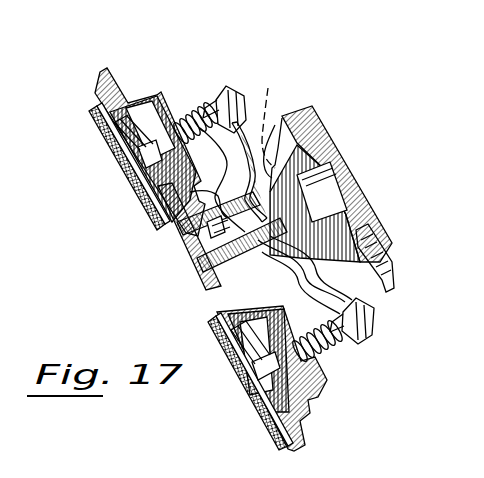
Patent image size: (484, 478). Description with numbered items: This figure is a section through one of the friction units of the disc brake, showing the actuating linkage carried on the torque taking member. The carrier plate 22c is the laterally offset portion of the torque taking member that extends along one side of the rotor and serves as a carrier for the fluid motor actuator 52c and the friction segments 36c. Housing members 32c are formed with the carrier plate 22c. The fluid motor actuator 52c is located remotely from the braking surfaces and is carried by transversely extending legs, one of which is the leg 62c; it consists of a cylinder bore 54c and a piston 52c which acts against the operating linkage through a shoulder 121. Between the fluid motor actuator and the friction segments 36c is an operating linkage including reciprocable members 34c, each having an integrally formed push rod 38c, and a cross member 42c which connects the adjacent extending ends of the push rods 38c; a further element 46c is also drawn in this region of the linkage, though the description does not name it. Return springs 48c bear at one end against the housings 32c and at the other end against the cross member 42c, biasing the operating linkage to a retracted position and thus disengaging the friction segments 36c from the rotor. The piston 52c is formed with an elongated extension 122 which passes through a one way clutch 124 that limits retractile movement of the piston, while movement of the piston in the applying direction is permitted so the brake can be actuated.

The carrier plate 22c is at (212, 291).
The housing member 32c is at (156, 94).
The reciprocable member 34c is at (168, 170).
The friction segment 36c is at (100, 128).
The push rod 38c is at (218, 98).
The cross member 42c is at (350, 292).
The strap 46c is at (257, 117).
The return spring 48c is at (200, 110).
The fluid motor actuator 52c is at (327, 158).
The cylinder bore 54c is at (370, 202).
The transversely extending leg 62c is at (270, 120).
The shoulder 121 is at (385, 242).
The elongated extension 122 is at (190, 228).
The one way clutch 124 is at (205, 258).